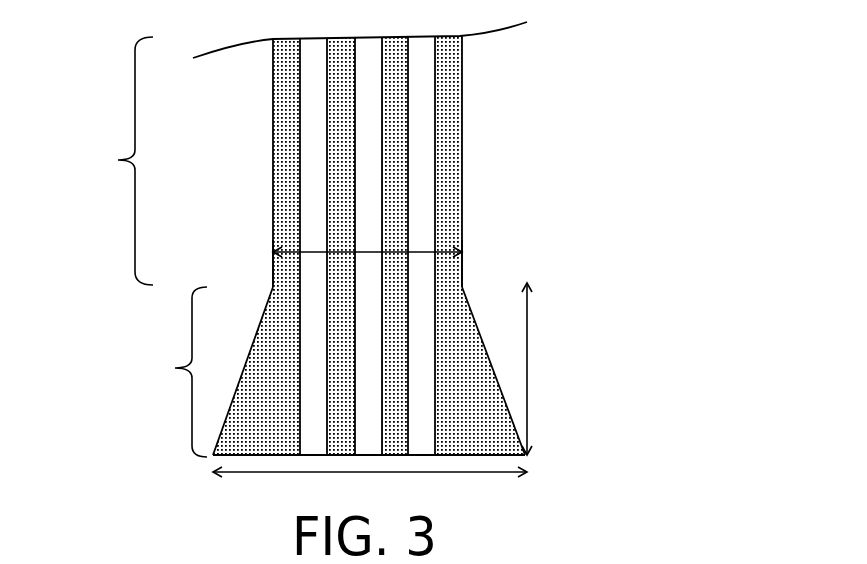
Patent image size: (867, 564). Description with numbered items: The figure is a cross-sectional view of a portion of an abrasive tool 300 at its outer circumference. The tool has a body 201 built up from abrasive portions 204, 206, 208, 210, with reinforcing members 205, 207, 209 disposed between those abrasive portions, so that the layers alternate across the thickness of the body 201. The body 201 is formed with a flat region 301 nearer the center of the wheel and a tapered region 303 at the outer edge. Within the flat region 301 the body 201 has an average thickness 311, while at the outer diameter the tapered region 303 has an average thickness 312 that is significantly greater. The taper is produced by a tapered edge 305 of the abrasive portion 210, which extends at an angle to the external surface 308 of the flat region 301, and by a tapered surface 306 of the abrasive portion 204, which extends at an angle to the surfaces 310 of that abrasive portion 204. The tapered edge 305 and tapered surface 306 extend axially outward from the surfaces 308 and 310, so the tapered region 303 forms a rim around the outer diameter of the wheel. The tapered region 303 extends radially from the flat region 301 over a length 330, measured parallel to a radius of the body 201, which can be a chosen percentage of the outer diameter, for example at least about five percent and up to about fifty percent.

The abrasive tool 300 is at (75, 25).
The flat region 301 is at (111, 161).
The tapered region 303 is at (327, 372).
The body 201 is at (610, 91).
The abrasive portion 204 is at (246, 162).
The reinforcing member 205 is at (261, 246).
The abrasive portion 206 is at (342, 73).
The reinforcing member 207 is at (366, 129).
The abrasive portion 208 is at (392, 99).
The reinforcing member 209 is at (420, 73).
The abrasive portion 210 is at (445, 49).
The tapered edge 305 is at (536, 371).
The tapered surface 306 is at (179, 371).
The external surface 308 is at (530, 263).
The surfaces 310 is at (212, 262).
The average thickness 311 is at (416, 219).
The average thickness 312 is at (352, 497).
The length 330 is at (528, 383).